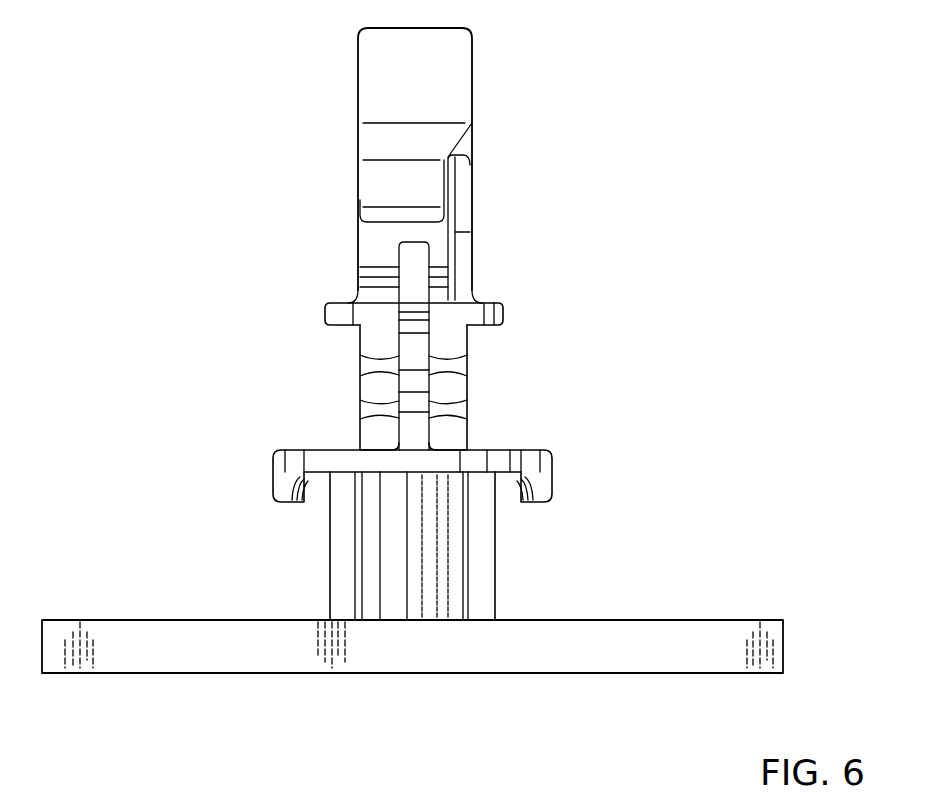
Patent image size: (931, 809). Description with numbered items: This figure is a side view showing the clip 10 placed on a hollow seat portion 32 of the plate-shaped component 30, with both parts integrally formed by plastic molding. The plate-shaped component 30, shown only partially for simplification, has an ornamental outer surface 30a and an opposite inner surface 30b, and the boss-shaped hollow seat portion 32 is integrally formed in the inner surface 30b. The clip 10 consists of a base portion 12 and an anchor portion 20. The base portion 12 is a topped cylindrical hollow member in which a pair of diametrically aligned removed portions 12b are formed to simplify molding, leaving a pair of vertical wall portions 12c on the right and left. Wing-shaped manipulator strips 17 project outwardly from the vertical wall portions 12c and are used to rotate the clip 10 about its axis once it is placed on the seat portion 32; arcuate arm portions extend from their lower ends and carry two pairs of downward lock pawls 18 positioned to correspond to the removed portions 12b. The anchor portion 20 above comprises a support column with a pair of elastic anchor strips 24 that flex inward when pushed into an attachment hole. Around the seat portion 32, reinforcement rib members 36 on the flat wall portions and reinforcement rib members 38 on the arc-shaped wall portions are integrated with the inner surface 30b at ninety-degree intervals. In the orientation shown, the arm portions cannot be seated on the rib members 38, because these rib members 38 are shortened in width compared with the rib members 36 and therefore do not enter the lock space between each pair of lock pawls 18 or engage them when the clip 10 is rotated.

The clip 10 is at (300, 53).
The anchor portion 20 is at (492, 139).
The elastic anchor strips 24 is at (378, 142).
The manipulator strips 17 is at (412, 251).
The base portion 12 is at (503, 317).
The removed portions 12b is at (349, 370).
The vertical wall portions 12c is at (457, 388).
The lock pawls 18 is at (293, 486).
The hollow seat portion 32 is at (520, 528).
The reinforcement rib members 38 is at (342, 557).
The reinforcement rib members 36 is at (410, 578).
The plate-shaped component 30 is at (83, 620).
The outer surface 30a is at (276, 687).
The inner surface 30b is at (645, 611).